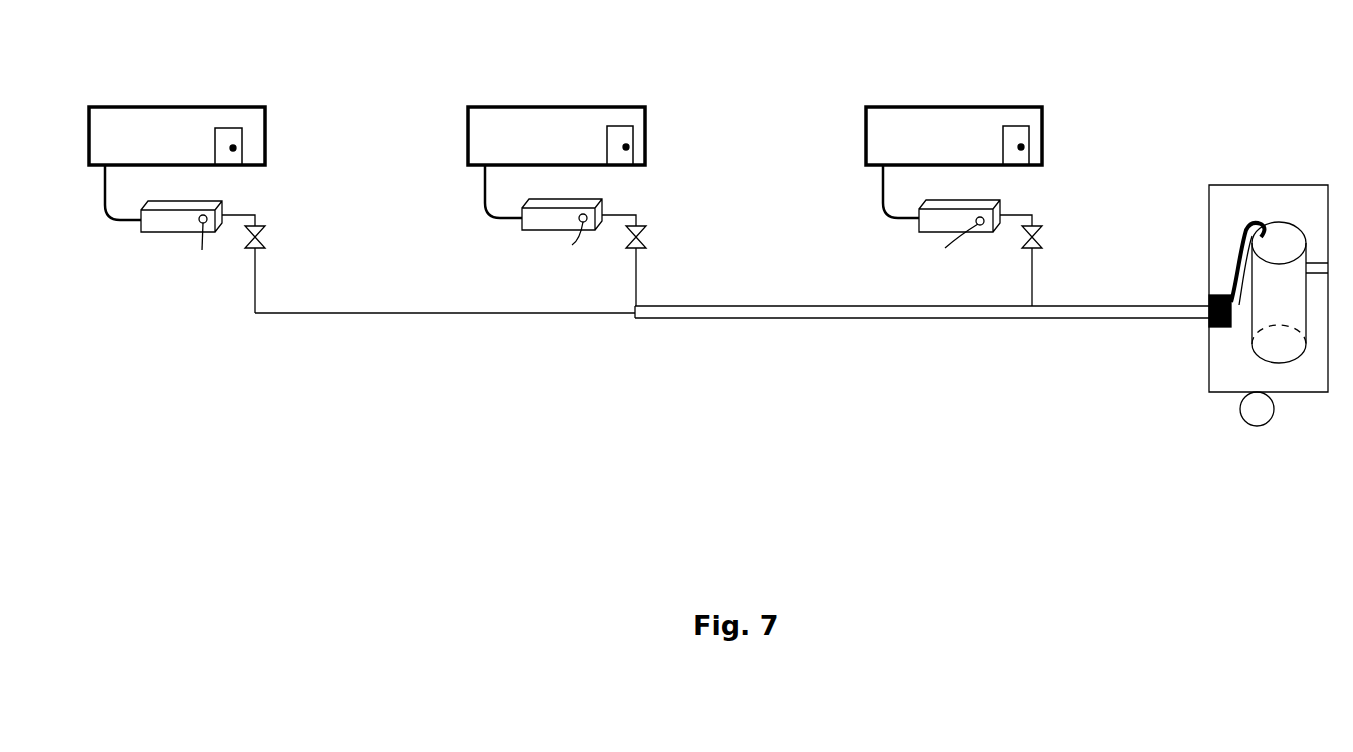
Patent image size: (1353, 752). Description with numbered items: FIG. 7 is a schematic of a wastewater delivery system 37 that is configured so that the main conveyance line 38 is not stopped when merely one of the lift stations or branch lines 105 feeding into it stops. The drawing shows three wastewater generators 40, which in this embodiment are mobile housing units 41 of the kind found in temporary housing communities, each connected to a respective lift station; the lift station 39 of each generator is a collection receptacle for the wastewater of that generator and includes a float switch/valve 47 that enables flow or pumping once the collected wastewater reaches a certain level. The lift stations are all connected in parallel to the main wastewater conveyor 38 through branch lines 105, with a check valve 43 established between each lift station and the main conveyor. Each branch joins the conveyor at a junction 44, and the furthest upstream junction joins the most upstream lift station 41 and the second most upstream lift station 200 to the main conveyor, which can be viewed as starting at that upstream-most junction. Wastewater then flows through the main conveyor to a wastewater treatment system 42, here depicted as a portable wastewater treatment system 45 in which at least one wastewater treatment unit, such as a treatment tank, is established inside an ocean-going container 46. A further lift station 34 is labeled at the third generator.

The sensor unit 34 is at (1003, 193).
The wastewater delivery system 37 is at (285, 424).
The main wastewater conveyor 38 is at (916, 323).
The lift station 39 is at (595, 198).
The wastewater generator 40 is at (242, 78).
The furthest upstream lift station 41 is at (272, 135).
The wastewater treatment system 42 is at (1278, 185).
The check valve 43 is at (273, 223).
The junction 44 is at (632, 302).
The portable wastewater treatment system 45 is at (1212, 403).
The ocean-going container 46 is at (1305, 403).
The float switch/valve 47 is at (587, 247).
The branch line 105 is at (262, 285).
The second most upstream lift station 200 is at (155, 205).